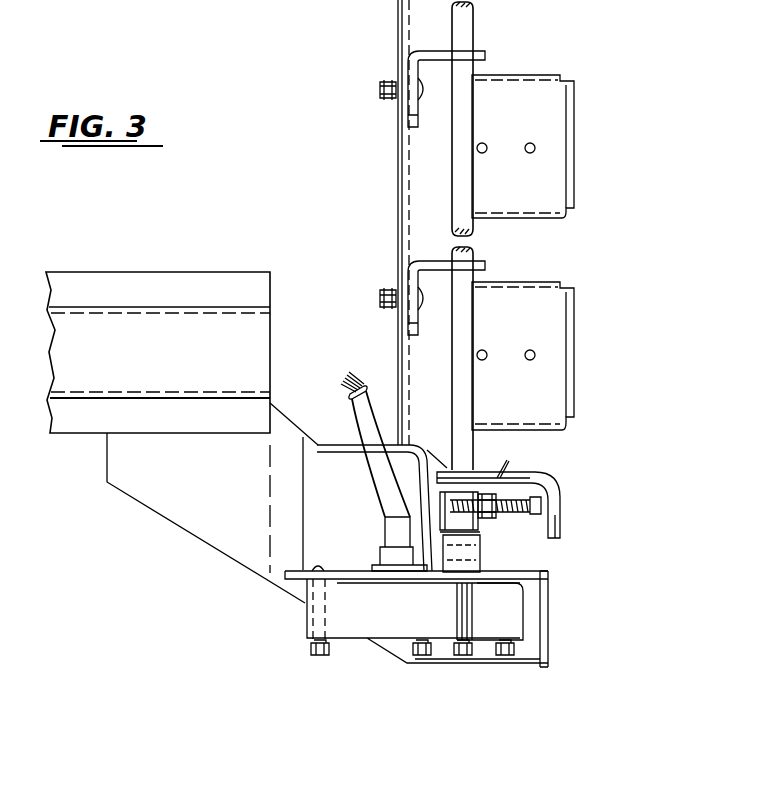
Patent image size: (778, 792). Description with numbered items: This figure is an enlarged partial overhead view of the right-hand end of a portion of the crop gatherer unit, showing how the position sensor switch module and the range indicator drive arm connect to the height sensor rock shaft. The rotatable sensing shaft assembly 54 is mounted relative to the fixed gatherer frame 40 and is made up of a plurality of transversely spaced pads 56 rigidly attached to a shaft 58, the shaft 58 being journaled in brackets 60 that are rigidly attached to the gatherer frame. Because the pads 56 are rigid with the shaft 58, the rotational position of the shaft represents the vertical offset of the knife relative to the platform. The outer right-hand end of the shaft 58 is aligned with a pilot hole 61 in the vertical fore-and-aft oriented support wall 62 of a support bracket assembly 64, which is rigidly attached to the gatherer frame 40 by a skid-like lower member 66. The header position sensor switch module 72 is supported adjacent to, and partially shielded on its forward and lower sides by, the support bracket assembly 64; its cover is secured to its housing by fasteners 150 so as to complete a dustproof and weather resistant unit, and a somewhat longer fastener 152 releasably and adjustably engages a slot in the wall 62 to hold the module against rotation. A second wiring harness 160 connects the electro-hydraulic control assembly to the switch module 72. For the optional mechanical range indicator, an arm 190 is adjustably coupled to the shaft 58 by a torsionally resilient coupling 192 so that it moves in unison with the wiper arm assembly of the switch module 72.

The gatherer frame 40 is at (211, 272).
The sensing shaft assembly 54 is at (495, 285).
The pads 56 is at (575, 148).
The shaft 58 is at (477, 233).
The brackets 60 is at (421, 52).
The pilot hole 61 is at (432, 570).
The support wall 62 is at (300, 571).
The support bracket assembly 64 is at (426, 614).
The skid-like lower member 66 is at (550, 619).
The header position sensor switch module 72 is at (357, 648).
The fasteners 150 is at (429, 655).
The fastener 152 is at (318, 566).
The second wiring harness 160 is at (352, 386).
The arm 190 is at (480, 520).
The torsionally resilient coupling 192 is at (482, 513).